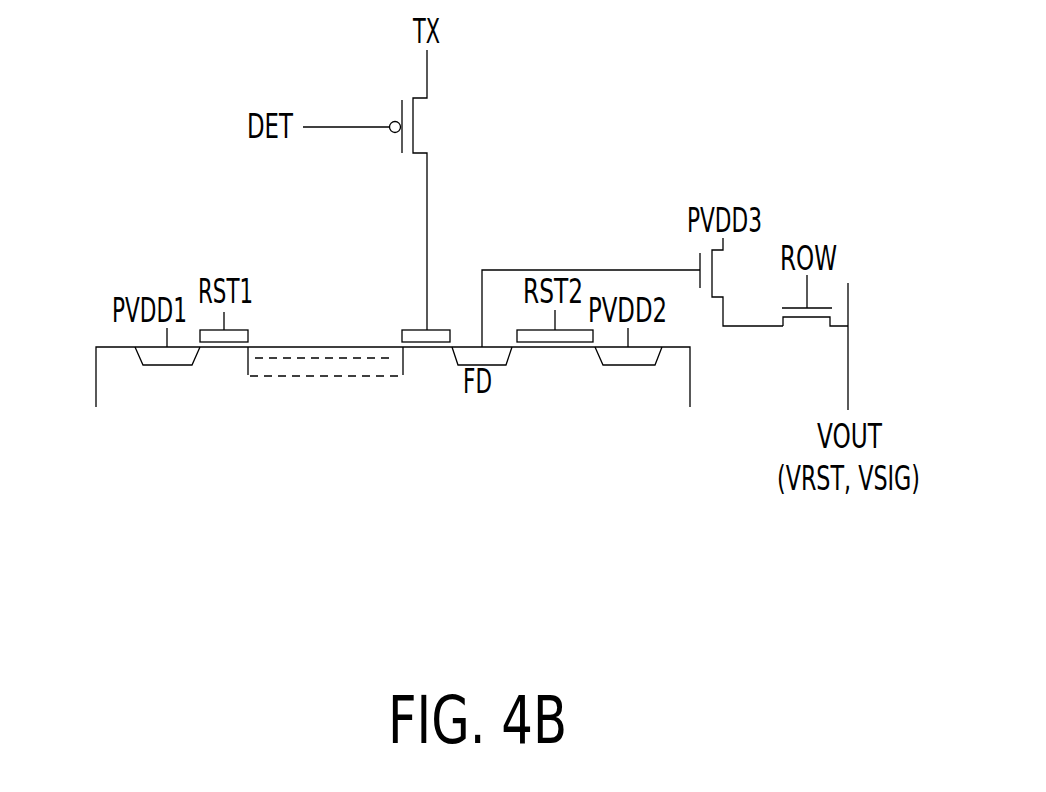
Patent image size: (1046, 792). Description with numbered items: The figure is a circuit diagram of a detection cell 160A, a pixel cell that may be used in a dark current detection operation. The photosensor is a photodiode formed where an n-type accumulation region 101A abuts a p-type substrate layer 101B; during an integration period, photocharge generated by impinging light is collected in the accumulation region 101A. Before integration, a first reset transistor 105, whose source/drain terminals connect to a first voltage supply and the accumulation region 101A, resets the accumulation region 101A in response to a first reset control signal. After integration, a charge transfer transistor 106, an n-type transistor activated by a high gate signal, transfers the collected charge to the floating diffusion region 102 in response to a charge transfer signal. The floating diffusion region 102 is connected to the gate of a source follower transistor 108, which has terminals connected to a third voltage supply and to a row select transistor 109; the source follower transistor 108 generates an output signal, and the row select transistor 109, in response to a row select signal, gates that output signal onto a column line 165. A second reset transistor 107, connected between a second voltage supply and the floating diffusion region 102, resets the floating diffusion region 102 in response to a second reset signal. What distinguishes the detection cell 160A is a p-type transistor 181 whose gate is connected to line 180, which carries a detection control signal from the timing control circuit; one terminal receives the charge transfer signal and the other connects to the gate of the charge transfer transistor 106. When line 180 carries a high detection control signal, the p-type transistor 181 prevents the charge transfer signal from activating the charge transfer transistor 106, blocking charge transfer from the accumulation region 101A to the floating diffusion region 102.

The detection cell 160A is at (156, 64).
The first reset transistor 105 is at (204, 362).
The accumulation region 101A is at (317, 377).
The p-type substrate layer 101B is at (317, 347).
The charge transfer transistor 106 is at (436, 362).
The floating diffusion region 102 is at (498, 366).
The second reset transistor 107 is at (557, 362).
The p-type transistor 181 is at (430, 124).
The line 180 is at (342, 127).
The source follower transistor 108 is at (731, 270).
The row select transistor 109 is at (813, 333).
The column line 165 is at (848, 353).